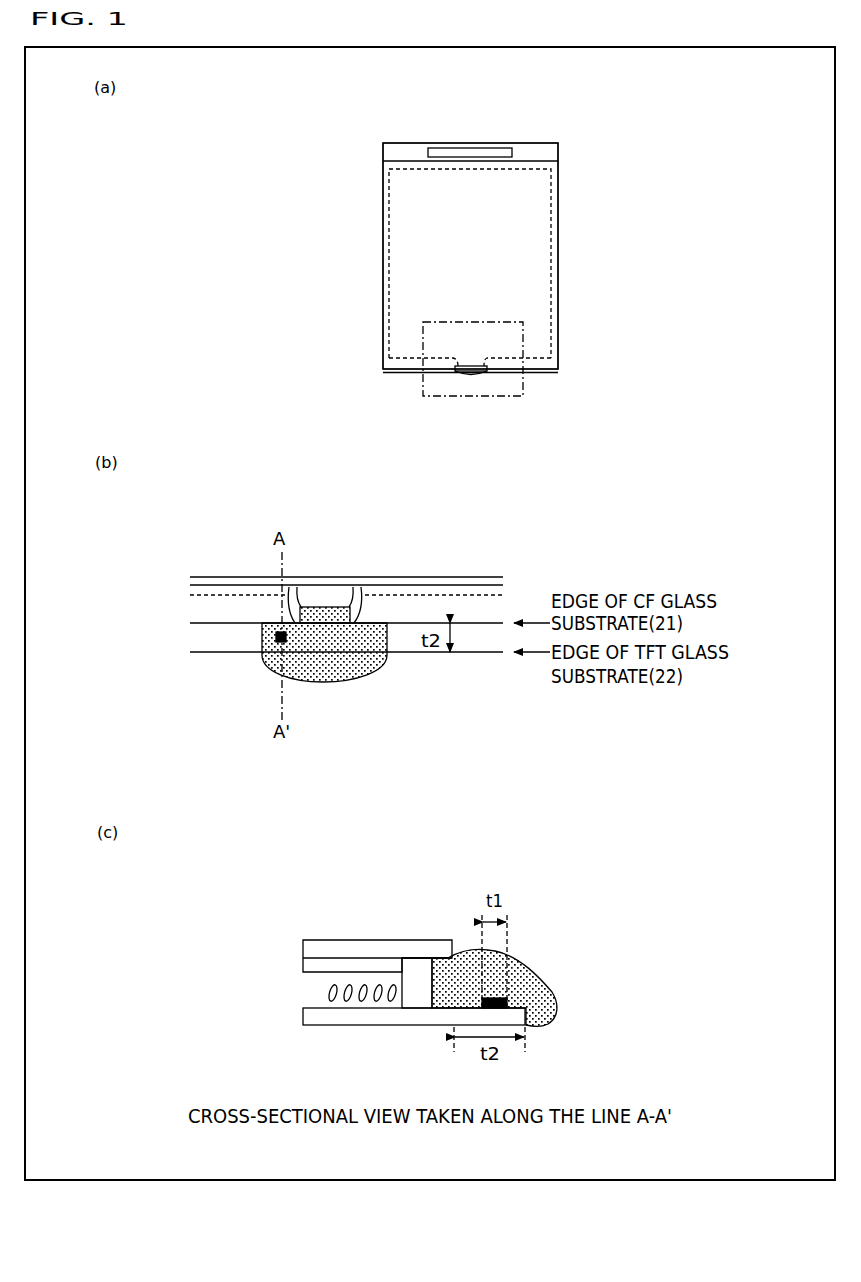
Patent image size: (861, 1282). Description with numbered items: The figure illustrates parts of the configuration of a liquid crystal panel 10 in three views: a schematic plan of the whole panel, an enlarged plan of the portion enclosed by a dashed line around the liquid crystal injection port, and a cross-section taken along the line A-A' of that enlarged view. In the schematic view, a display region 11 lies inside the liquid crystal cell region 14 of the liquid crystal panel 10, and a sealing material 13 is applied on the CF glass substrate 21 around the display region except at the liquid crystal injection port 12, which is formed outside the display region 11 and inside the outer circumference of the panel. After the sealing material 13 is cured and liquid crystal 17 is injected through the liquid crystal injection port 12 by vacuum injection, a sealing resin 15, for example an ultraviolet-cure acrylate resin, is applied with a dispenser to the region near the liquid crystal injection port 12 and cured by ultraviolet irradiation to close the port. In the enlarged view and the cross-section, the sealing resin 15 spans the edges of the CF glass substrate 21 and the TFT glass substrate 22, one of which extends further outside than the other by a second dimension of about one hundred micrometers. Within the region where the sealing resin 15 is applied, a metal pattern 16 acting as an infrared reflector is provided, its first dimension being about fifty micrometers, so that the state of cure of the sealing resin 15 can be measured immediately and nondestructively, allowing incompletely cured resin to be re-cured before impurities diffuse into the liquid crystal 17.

The liquid crystal panel 10 is at (366, 141).
The display region 11 is at (542, 197).
The liquid crystal injection port 12 is at (472, 365).
The sealing material 13 is at (550, 250).
The liquid crystal cell region 14 is at (558, 298).
The sealing resin 15 is at (328, 682).
The metal pattern (infrared reflector) 16 is at (275, 637).
The liquid crystal 17 is at (330, 990).
The CF glass substrate 21 is at (303, 947).
The TFT glass substrate 22 is at (303, 1017).